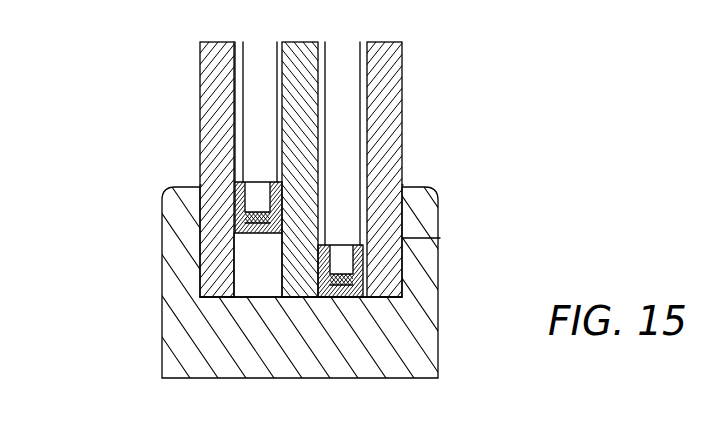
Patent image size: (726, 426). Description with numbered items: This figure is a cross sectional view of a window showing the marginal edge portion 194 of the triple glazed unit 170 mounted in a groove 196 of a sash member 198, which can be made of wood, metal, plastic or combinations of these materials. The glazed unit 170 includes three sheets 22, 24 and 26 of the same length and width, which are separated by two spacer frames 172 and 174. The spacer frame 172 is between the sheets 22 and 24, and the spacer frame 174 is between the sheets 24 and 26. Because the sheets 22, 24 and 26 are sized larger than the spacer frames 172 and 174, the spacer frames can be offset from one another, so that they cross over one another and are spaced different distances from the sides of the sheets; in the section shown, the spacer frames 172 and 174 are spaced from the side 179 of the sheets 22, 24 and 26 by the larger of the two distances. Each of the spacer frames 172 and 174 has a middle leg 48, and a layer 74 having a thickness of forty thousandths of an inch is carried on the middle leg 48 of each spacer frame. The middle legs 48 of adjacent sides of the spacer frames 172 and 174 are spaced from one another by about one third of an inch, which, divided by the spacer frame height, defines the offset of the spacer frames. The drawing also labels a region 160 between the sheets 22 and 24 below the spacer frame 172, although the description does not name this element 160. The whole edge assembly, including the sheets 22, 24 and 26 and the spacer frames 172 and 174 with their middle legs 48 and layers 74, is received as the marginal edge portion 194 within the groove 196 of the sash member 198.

The multiple glazed unit 170 is at (118, 98).
The sheet 22 is at (220, 42).
The sheet 24 is at (297, 55).
The sheet 26 is at (384, 43).
The spacer frame 172 is at (258, 43).
The spacer frame 174 is at (350, 42).
The middle leg 48 is at (258, 206).
The cavity 160 is at (245, 263).
The marginal edge portion 194 is at (200, 185).
The groove 196 is at (440, 231).
The sash member 198 is at (440, 253).
The layer 74 is at (264, 240).
The side 179 is at (300, 298).